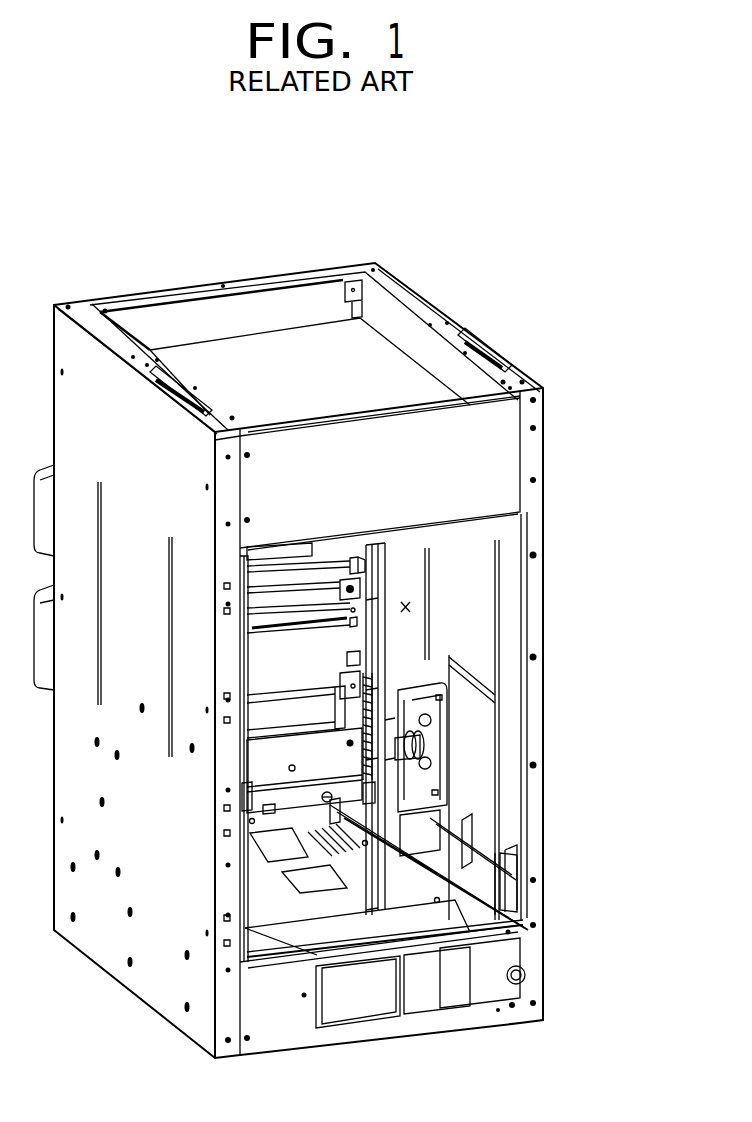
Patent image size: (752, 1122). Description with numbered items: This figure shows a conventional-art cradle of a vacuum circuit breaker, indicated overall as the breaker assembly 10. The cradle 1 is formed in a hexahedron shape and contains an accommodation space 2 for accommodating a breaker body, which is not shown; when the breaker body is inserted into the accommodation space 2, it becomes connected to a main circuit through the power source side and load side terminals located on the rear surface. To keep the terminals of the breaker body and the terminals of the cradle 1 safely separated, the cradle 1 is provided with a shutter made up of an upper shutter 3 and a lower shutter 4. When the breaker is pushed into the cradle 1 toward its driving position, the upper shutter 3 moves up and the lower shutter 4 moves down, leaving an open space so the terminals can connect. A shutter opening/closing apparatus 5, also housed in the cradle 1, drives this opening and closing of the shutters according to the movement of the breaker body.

The apparatus 10 is at (610, 223).
The cradle 1 is at (455, 345).
The accommodation space 2 is at (408, 607).
The upper shutter 3 is at (355, 543).
The lower shutter 4 is at (355, 643).
The shutter opening/closing apparatus 5 is at (452, 741).